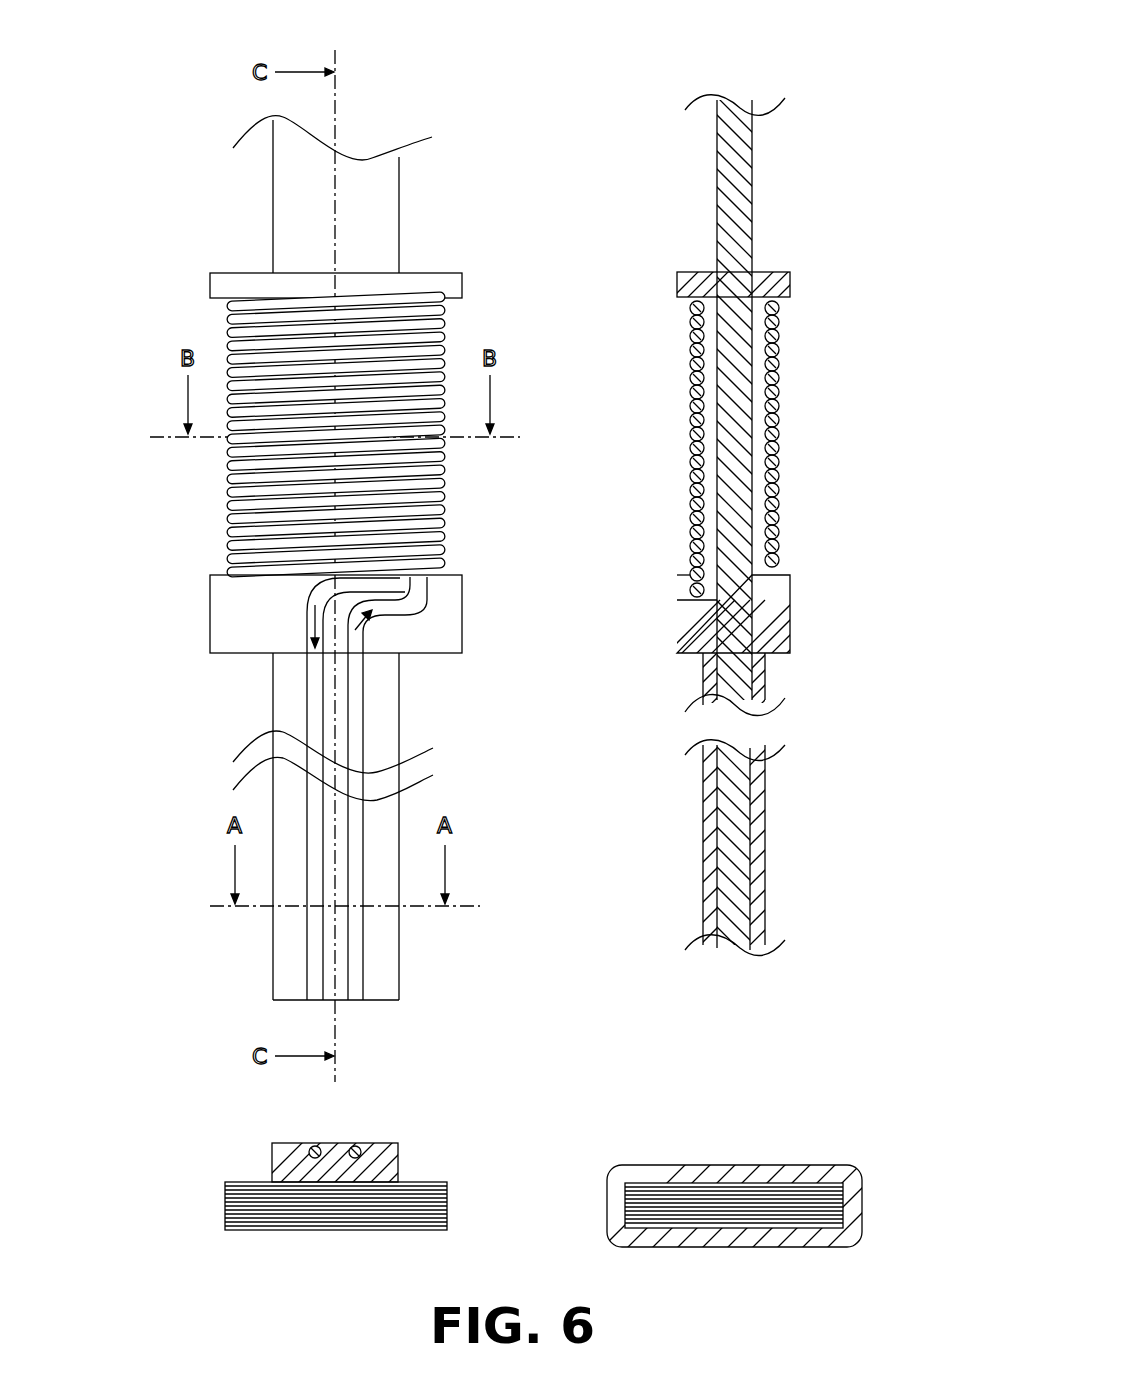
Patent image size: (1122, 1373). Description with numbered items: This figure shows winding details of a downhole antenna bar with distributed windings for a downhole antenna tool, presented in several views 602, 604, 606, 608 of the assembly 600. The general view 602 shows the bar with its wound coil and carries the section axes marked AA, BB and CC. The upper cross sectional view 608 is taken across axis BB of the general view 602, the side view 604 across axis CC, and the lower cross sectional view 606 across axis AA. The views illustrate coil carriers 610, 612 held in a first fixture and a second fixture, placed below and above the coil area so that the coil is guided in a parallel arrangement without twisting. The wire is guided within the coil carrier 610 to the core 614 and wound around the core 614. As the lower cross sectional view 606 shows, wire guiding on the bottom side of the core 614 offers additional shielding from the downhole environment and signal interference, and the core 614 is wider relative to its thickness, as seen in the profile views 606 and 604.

The sensor assembly 600 is at (895, 108).
The general view 602 is at (202, 236).
The side view 604 is at (808, 248).
The lower cross sectional view 606 is at (288, 1123).
The upper cross sectional view 608 is at (873, 1175).
The coil carrier 610 is at (202, 593).
The coil carrier 612 is at (458, 288).
The core 614 is at (437, 1178).